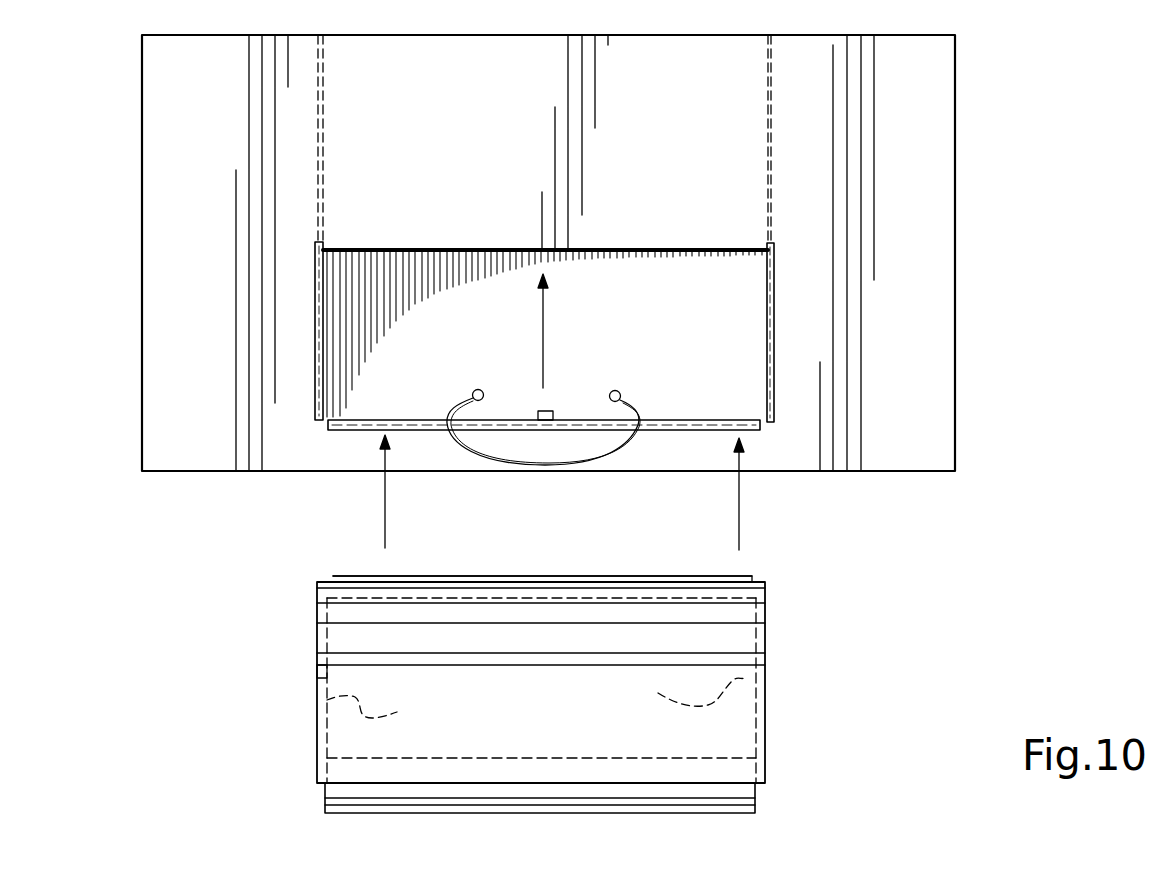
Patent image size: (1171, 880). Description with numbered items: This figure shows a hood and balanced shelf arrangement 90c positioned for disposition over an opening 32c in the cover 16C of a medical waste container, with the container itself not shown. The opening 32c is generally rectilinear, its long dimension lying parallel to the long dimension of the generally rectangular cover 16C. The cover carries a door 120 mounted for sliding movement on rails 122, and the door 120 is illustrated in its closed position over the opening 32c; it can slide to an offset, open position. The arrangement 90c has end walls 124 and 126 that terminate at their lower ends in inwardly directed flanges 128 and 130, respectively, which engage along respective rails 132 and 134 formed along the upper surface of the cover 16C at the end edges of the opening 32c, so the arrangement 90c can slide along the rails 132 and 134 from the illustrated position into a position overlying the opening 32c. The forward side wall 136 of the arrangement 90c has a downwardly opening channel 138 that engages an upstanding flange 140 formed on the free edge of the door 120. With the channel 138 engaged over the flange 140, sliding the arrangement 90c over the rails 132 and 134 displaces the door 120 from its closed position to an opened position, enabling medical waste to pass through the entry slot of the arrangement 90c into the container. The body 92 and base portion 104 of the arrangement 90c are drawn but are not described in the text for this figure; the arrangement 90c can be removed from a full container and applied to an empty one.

The cover 16C is at (303, 471).
The rails 122 is at (768, 107).
The door 120 is at (632, 352).
The opening 32c is at (407, 256).
The rail 134 is at (315, 310).
The rail 132 is at (774, 299).
The upstanding flange 140 is at (673, 431).
The hood and balanced shelf arrangement 90c is at (865, 604).
The drawer body 92 is at (727, 732).
The forward side wall 136 is at (448, 580).
The downwardly opening channel 138 is at (607, 575).
The end wall 126 is at (317, 652).
The end wall 124 is at (766, 665).
The inwardly directed flange 130 is at (383, 707).
The inwardly directed flange 128 is at (682, 688).
The base plate 104 is at (337, 805).